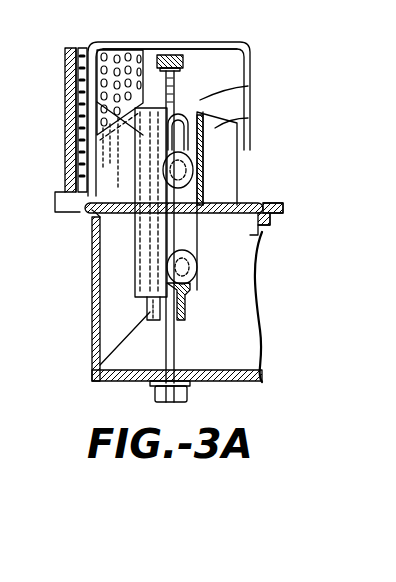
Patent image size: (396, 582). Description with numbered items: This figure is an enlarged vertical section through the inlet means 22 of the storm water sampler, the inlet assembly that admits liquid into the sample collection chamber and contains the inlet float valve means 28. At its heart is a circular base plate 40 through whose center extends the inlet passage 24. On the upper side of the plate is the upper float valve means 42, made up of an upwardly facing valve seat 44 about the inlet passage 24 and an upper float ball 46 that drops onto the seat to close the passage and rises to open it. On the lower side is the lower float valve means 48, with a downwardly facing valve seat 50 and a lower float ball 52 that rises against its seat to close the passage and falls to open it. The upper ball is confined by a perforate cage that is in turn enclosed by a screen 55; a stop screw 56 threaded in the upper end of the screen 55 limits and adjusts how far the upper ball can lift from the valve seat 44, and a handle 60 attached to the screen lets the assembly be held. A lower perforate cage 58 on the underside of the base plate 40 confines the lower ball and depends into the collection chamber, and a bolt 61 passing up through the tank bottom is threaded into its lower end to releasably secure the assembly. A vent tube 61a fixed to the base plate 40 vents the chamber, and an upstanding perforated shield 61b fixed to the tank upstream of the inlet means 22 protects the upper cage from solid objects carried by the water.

The inlet means 22 is at (92, 39).
The handle 60 is at (164, 42).
The stop screw 56 is at (200, 78).
The vent tube 61a is at (248, 86).
The float ball 46 is at (248, 118).
The valve seat 44 is at (232, 156).
The inlet passage 24 is at (232, 166).
The base plate 40 is at (263, 206).
The screen 55 is at (110, 118).
The upper float valve means 42 is at (162, 170).
The perforated shield 61b is at (64, 170).
The perforate cage 58 is at (134, 240).
The lower float valve means 48 is at (168, 263).
The valve seat 50 is at (200, 275).
The float ball 52 is at (200, 286).
The inlet float valve means 28 is at (226, 318).
The bolt 61 is at (190, 392).